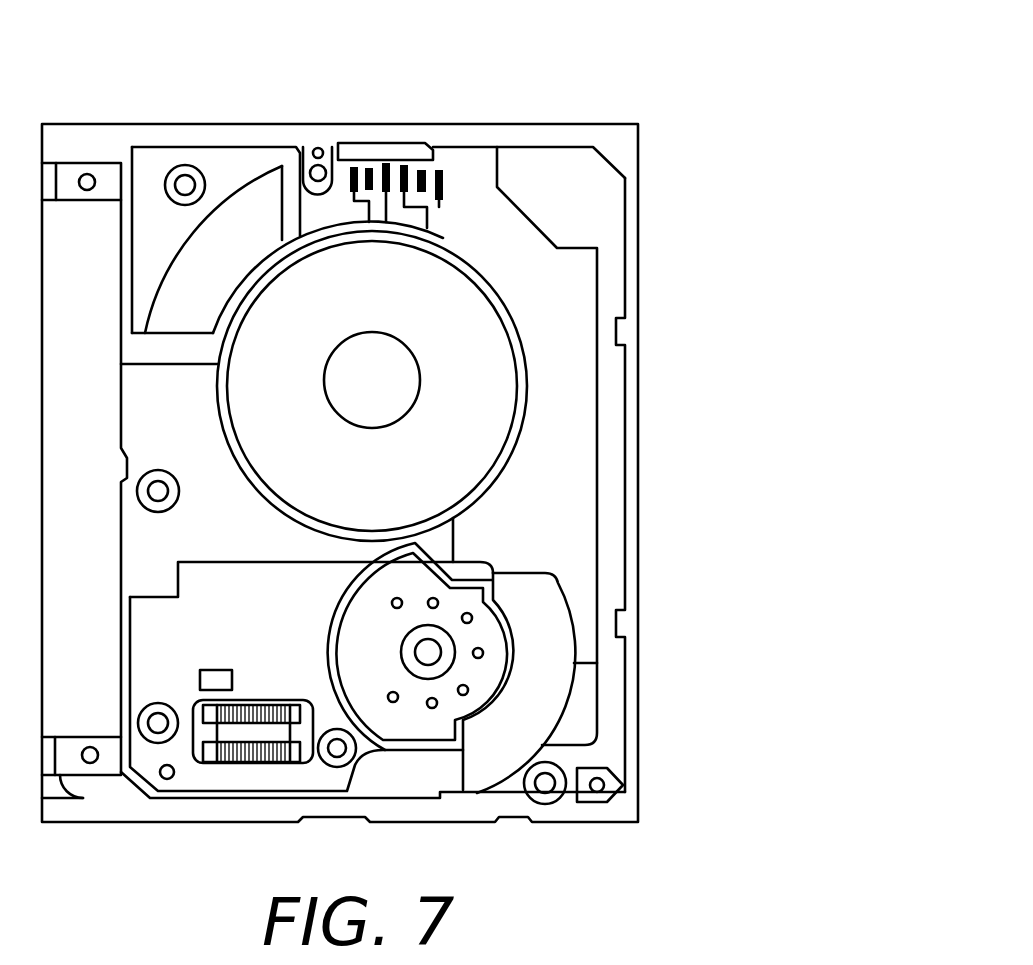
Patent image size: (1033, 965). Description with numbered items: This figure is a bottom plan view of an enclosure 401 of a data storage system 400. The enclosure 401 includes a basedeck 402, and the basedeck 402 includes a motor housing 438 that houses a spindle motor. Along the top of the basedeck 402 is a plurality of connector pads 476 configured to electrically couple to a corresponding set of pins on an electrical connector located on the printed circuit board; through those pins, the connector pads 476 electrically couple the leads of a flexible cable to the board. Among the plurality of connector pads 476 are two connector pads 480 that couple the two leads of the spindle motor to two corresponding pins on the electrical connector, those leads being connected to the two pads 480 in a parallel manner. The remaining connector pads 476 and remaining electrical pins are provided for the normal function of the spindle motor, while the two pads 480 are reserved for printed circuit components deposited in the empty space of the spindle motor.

The data storage system 400 is at (727, 140).
The enclosure 401 is at (610, 120).
The basedeck 402 is at (630, 523).
The motor housing 438 is at (480, 372).
The plurality of connector pads 476 is at (380, 147).
The connector pads 480 is at (442, 150).